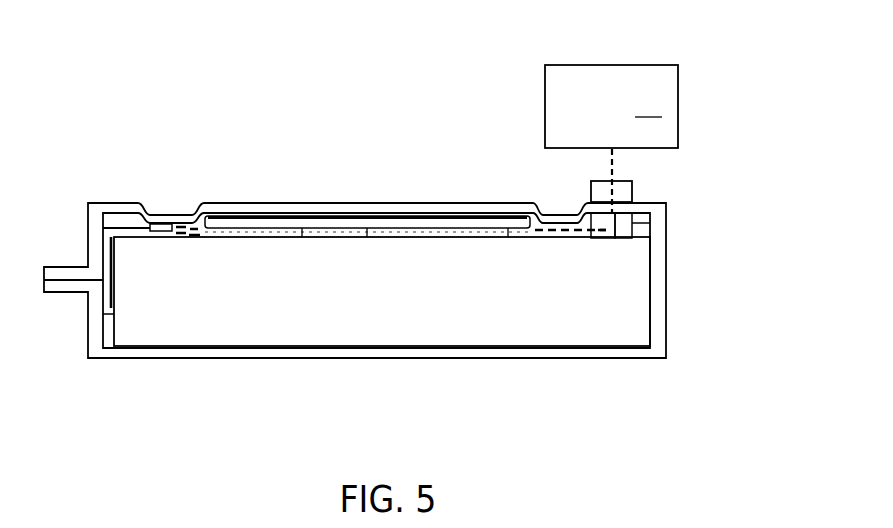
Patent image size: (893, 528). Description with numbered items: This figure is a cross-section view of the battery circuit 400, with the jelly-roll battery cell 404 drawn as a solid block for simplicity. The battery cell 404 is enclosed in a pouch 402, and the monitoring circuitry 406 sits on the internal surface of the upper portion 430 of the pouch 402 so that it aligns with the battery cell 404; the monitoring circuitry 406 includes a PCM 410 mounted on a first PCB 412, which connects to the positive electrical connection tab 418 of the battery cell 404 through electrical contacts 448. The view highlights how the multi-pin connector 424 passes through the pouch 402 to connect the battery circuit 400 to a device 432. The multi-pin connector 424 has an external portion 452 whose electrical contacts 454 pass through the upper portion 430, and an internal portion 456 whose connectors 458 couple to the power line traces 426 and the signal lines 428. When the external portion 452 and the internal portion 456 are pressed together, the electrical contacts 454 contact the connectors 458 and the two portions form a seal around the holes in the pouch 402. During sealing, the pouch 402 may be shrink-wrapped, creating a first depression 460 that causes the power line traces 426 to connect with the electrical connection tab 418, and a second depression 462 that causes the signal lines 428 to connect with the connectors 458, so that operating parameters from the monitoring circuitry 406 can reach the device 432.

The battery circuit 400 is at (198, 50).
The pouch 402 is at (427, 359).
The battery cell 404 is at (203, 325).
The monitoring circuitry 406 is at (370, 196).
The PCM 410 is at (440, 228).
The first PCB 412 is at (275, 216).
The positive electrical connection tab 418 is at (102, 253).
The multi-pin connector 424 is at (690, 190).
The power line traces 426 is at (198, 208).
The signal lines 428 is at (573, 208).
The upper portion 430 is at (447, 128).
The device 432 is at (611, 139).
The electrical contacts 448 is at (150, 232).
The external portion 452 is at (634, 194).
The electrical contacts 454 is at (638, 208).
The internal portion 456 is at (633, 226).
The connectors 458 is at (610, 238).
The first depression 460 is at (165, 203).
The second depression 462 is at (553, 219).